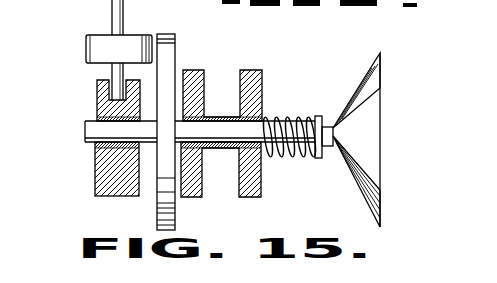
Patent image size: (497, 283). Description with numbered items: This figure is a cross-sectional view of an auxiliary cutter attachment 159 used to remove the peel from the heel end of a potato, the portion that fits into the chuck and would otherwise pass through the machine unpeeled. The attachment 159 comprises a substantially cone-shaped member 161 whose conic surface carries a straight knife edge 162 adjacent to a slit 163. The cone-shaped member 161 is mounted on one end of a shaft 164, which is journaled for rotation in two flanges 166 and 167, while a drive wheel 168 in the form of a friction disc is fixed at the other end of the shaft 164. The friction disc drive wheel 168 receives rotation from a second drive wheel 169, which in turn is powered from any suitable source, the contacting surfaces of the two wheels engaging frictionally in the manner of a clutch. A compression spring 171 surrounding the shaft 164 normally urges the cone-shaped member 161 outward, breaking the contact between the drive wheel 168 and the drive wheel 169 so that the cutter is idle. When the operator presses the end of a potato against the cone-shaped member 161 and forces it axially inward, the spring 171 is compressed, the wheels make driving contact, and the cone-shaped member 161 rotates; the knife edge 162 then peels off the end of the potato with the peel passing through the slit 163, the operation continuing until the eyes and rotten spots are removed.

The attachment 159 is at (266, 64).
The cone-shaped member 161 is at (370, 140).
The knife edge 162 is at (382, 82).
The slit 163 is at (363, 104).
The shaft 164 is at (274, 120).
The flange 166 is at (252, 72).
The flange 167 is at (102, 107).
The drive wheel 168 is at (173, 35).
The drive wheel 169 is at (95, 40).
The compression spring 171 is at (288, 158).